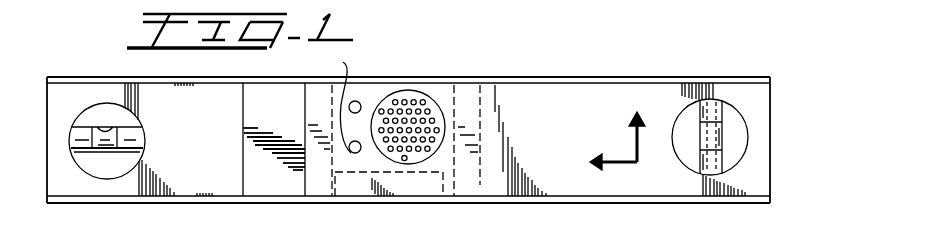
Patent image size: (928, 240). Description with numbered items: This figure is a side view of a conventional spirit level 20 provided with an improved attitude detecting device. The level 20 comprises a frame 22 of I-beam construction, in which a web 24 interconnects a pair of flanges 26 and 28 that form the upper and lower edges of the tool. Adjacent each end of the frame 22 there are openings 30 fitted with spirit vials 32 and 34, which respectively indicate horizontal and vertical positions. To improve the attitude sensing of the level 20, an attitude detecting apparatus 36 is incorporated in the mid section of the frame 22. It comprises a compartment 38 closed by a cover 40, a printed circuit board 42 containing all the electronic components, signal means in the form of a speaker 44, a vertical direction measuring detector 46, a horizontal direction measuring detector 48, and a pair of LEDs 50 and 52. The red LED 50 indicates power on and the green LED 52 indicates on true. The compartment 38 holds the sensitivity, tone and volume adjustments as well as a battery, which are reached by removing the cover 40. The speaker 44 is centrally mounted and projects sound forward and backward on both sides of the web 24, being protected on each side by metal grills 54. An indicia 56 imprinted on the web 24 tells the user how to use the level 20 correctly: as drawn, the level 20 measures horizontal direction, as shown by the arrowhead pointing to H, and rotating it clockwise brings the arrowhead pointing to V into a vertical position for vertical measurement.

The level 20 is at (645, 63).
The frame 22 is at (773, 144).
The web 24 is at (745, 172).
The flange 26 is at (524, 78).
The flange 28 is at (706, 203).
The openings 30 is at (83, 159).
The spirit vial 32 is at (78, 137).
The spirit vial 34 is at (709, 106).
The attitude detecting apparatus 36 is at (403, 73).
The compartment 38 is at (243, 113).
The cover 40 is at (263, 183).
The printed circuit board 42 is at (318, 185).
The speaker 44 is at (437, 117).
The vertical direction measuring detector 46 is at (412, 184).
The horizontal direction measuring detector 48 is at (467, 185).
The LED 50 is at (359, 101).
The LED 52 is at (333, 99).
The metal grills 54 is at (458, 83).
The indicia 56 is at (617, 157).